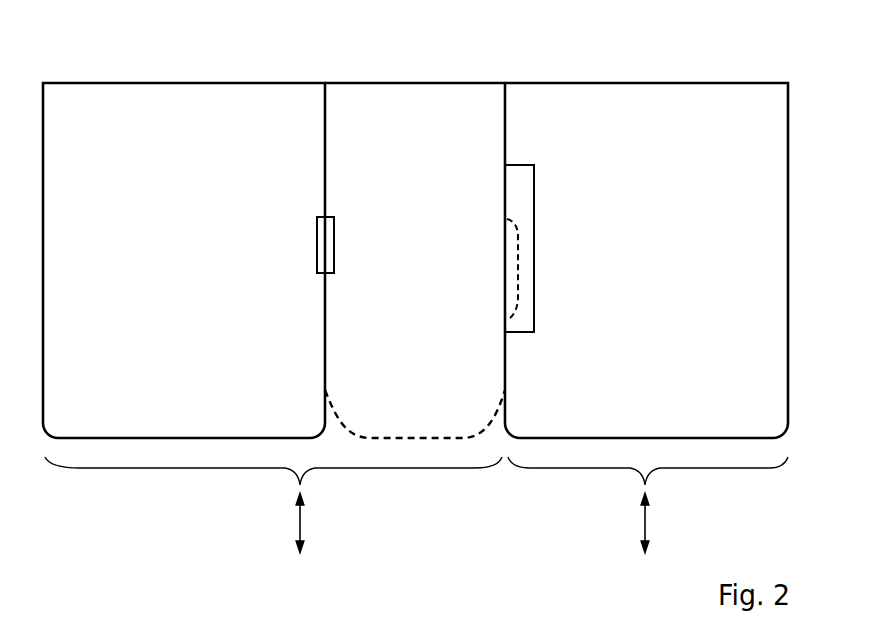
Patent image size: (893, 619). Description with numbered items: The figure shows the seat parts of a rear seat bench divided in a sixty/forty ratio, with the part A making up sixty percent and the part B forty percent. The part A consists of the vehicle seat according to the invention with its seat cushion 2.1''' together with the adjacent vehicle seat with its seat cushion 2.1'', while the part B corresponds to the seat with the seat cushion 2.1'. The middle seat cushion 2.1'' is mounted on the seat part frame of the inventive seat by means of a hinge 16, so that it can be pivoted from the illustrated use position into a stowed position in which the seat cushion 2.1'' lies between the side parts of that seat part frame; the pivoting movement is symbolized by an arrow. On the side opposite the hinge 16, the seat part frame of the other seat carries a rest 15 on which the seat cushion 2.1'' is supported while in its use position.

The seat cushion 2.1' is at (646, 260).
The seat cushion 2.1'' is at (415, 260).
The seat cushion 2.1''' is at (184, 260).
The rest 15 is at (522, 238).
The hinge 16 is at (335, 230).
The part A is at (302, 515).
The part B is at (647, 515).